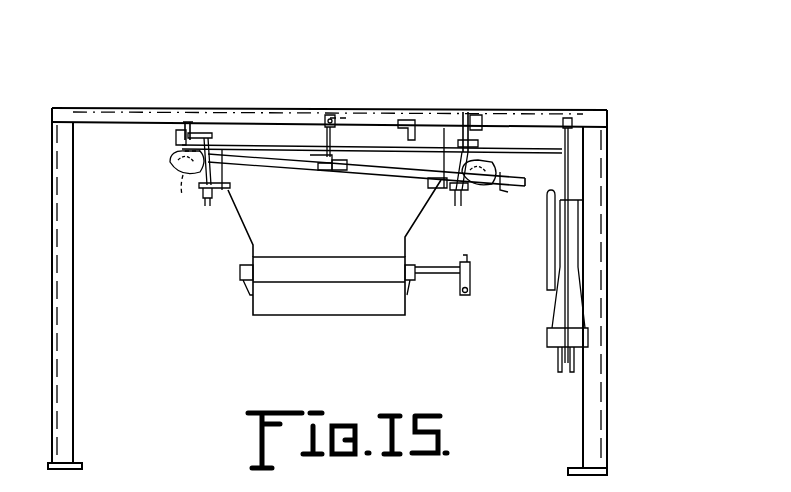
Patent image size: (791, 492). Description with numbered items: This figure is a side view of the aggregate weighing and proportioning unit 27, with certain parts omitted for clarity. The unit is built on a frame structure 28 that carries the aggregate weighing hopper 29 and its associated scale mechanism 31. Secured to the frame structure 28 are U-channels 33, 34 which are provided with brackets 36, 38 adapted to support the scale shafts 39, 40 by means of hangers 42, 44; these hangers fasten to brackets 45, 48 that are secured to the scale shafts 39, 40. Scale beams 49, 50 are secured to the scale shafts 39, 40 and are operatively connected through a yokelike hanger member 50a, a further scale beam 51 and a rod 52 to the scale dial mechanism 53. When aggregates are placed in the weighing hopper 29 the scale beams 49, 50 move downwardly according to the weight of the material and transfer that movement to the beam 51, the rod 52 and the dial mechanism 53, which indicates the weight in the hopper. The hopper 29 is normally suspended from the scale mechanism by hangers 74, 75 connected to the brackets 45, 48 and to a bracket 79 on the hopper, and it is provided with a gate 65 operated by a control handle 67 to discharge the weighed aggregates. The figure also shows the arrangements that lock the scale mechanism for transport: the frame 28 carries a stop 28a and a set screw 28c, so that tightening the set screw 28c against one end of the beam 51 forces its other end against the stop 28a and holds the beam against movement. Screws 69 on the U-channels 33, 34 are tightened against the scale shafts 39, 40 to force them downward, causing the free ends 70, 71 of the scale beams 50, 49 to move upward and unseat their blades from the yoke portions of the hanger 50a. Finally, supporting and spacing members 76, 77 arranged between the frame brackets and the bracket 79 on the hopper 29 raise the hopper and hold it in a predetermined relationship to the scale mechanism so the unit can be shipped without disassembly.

The weighing and proportioning unit 27 is at (601, 372).
The frame structure 28 is at (595, 432).
The stop 28a is at (575, 112).
The set screw 28c is at (340, 110).
The aggregate weighing hopper 29 is at (410, 212).
The scale mechanism 31 is at (372, 160).
The U-channel 33 is at (478, 118).
The U-channel 34 is at (186, 108).
The bracket 36 is at (456, 127).
The bracket 38 is at (205, 125).
The scale shaft 39 is at (192, 172).
The scale shaft 40 is at (503, 188).
The hanger 42 is at (470, 147).
The hanger 44 is at (178, 162).
The bracket 45 is at (482, 157).
The bracket 48 is at (205, 190).
The scale beam 49 is at (290, 167).
The scale beam 50 is at (403, 172).
The hanger member 50a is at (331, 112).
The scale beam 51 is at (342, 125).
The rod 52 is at (570, 187).
The scale dial mechanism 53 is at (575, 250).
The gate 65 is at (412, 310).
The control handle 67 is at (472, 290).
The screw 69 is at (176, 138).
The free end of scale beam 70 is at (345, 172).
The free end of scale beam 71 is at (318, 172).
The hanger 74 is at (460, 194).
The hanger 75 is at (212, 208).
The supporting and spacing member 76 is at (478, 182).
The supporting and spacing member 77 is at (214, 136).
The bracket 79 is at (236, 196).